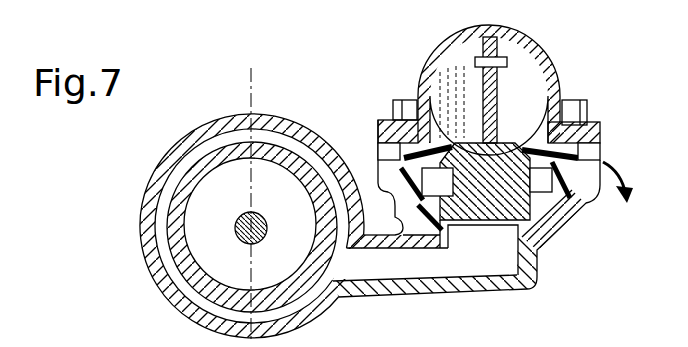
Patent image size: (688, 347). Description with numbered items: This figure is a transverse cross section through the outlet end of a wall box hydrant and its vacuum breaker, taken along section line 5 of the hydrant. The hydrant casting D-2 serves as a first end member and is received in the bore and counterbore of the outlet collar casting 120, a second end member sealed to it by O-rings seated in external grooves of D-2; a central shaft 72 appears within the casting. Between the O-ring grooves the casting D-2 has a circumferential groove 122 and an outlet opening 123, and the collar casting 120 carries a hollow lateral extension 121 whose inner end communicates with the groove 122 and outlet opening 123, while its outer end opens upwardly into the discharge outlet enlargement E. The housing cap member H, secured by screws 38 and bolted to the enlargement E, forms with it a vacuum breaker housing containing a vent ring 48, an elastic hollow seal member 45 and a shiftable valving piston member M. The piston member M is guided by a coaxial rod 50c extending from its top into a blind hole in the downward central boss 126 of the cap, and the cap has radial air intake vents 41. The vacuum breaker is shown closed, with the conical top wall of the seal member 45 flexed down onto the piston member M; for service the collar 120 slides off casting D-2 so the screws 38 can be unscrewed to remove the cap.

The section line indicator 5 is at (252, 90).
The outlet collar casting 120 is at (184, 137).
The hydrant casting D-2 is at (174, 190).
The circumferential groove 122 is at (294, 147).
The shaft 72 is at (234, 227).
The hollow lateral extension 121 is at (403, 295).
The outlet opening 123 is at (413, 272).
The valving piston member M is at (477, 226).
The vent ring 48 is at (396, 153).
The screws 38 is at (398, 99).
The housing cap member H is at (549, 53).
The downward central boss 126 is at (452, 62).
The coaxial rod 50c is at (536, 86).
The air intake vents 41 is at (601, 150).
The elastic hollow seal member 45 is at (570, 197).
The discharge outlet enlargement E is at (570, 230).